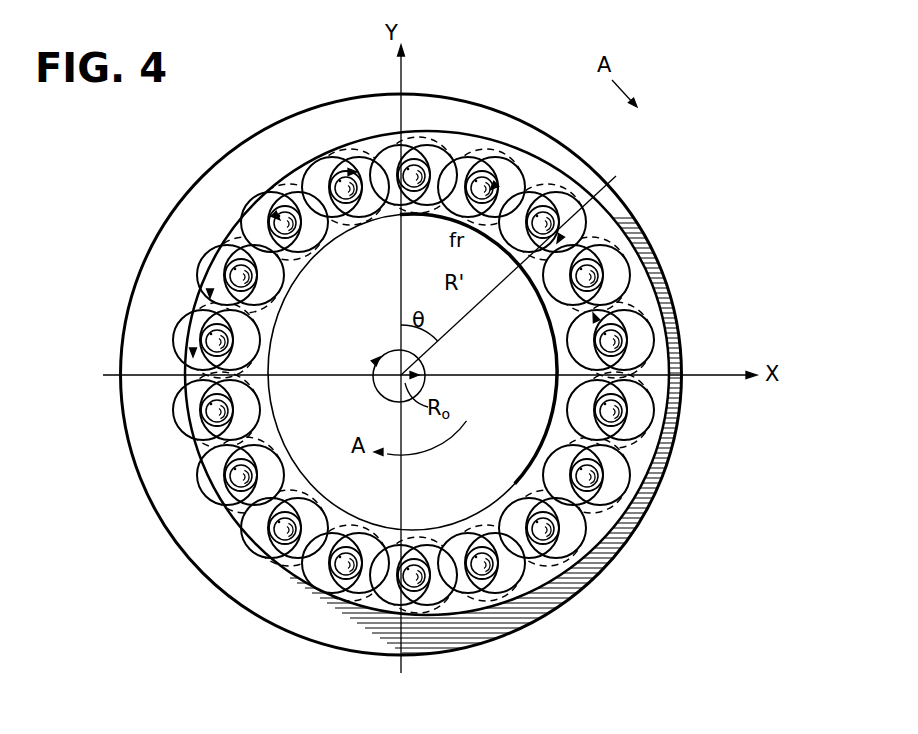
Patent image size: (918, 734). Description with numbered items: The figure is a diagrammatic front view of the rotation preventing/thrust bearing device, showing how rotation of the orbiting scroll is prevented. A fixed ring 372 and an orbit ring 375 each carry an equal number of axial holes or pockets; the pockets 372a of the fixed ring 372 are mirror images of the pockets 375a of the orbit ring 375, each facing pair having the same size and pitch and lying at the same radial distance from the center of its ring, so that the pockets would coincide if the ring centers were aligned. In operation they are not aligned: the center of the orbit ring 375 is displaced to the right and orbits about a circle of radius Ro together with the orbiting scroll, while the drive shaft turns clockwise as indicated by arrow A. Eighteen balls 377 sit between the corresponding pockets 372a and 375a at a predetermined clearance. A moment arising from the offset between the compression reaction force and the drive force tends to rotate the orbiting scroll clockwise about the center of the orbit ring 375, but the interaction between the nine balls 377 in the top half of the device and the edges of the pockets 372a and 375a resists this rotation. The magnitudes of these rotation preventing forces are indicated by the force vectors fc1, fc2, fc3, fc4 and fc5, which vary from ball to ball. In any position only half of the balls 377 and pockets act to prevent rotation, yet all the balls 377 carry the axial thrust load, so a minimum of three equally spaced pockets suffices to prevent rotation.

The fixed ring 372 is at (557, 414).
The holes or pockets of fixed ring 372a is at (567, 344).
The orbit ring 375 is at (608, 227).
The holes or pockets of orbit ring 375a is at (662, 334).
The balls 377 is at (630, 407).
The force vector fc1 is at (350, 172).
The force vector fc2 is at (330, 195).
The force vector fc3 is at (274, 216).
The force vector fc4 is at (210, 292).
The force vector fc5 is at (193, 350).